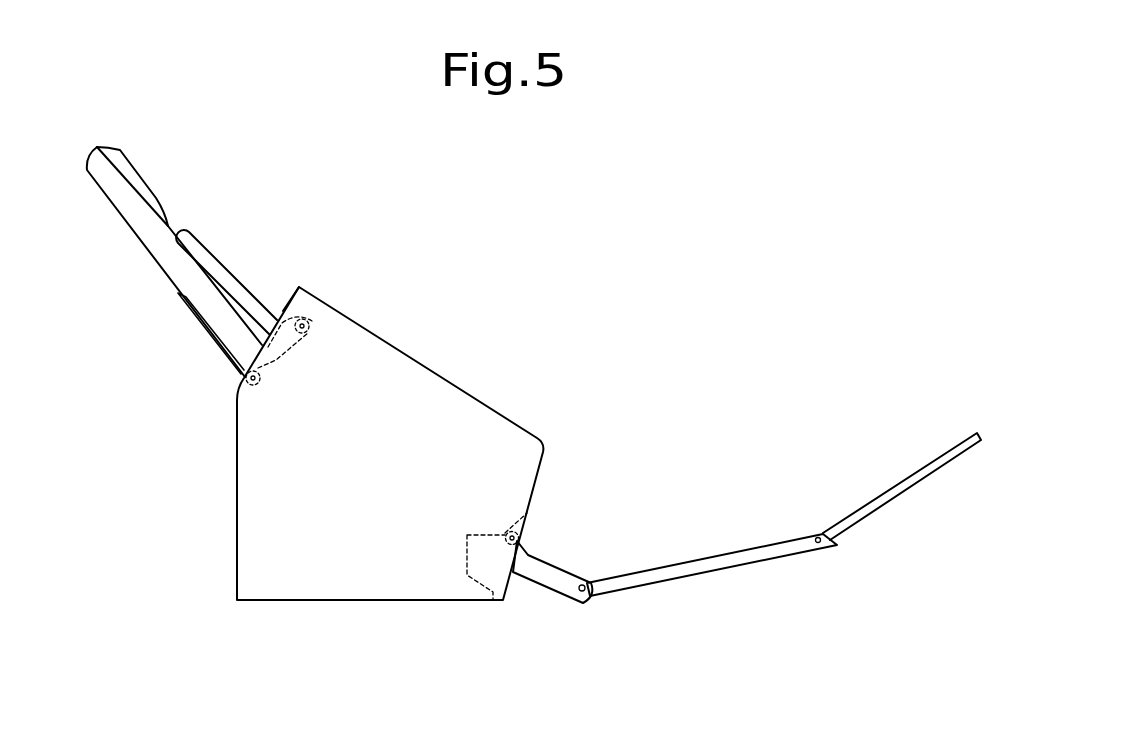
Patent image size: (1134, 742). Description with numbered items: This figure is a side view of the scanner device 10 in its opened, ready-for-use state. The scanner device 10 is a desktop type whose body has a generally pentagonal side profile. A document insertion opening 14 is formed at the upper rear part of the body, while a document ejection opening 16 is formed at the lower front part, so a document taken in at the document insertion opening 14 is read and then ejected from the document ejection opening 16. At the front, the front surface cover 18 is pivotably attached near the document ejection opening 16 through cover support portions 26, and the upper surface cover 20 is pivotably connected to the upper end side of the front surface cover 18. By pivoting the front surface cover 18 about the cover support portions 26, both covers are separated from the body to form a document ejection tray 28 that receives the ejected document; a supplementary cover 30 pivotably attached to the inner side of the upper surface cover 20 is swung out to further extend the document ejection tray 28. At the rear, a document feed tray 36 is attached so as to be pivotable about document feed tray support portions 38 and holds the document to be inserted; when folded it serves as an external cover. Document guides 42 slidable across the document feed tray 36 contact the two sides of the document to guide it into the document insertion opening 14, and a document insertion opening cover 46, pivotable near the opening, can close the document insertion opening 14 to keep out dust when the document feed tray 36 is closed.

The scanner device 10 is at (529, 351).
The document insertion opening 14 is at (283, 297).
The document ejection opening 16 is at (494, 562).
The front surface cover 18 is at (552, 595).
The upper surface cover 20 is at (705, 570).
The cover support portions 26 is at (534, 525).
The document ejection tray 28 is at (771, 572).
The supplementary cover 30 is at (917, 478).
The document feed tray 36 is at (158, 242).
The document feed tray support portions 38 is at (327, 320).
The document guides 42 is at (222, 277).
The document insertion opening cover 46 is at (215, 350).